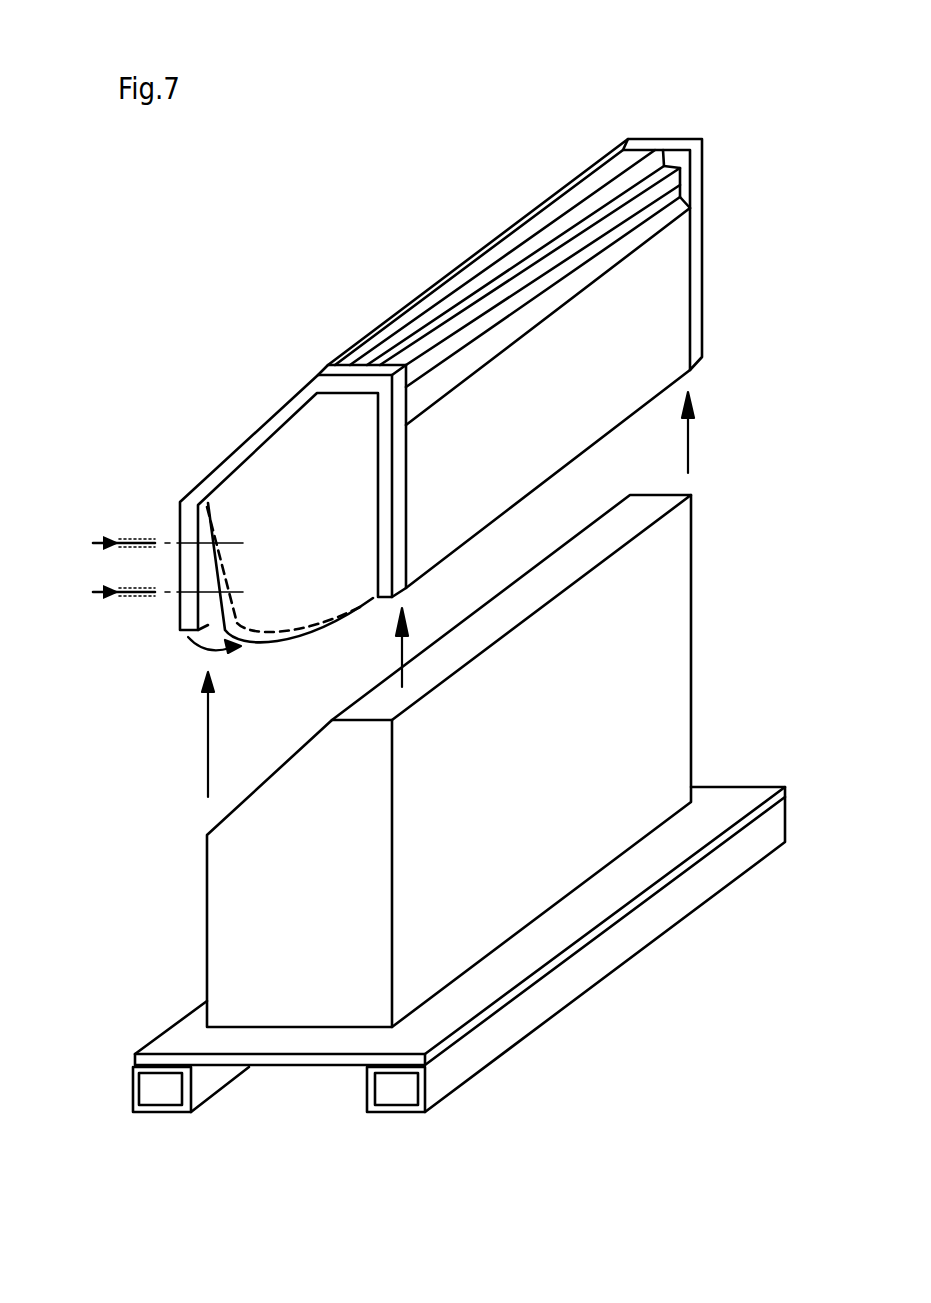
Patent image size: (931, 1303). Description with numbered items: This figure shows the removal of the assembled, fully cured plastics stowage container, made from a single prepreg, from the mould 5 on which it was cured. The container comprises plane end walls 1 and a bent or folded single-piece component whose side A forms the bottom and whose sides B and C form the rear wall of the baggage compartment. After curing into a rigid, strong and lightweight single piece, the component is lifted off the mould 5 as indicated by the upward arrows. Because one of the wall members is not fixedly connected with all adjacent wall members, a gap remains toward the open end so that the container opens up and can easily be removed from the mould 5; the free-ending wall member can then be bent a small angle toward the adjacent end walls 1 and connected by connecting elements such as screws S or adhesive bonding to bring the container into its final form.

The plane end wall 1 is at (285, 458).
The side A of component A is at (663, 308).
The side B of component B is at (610, 185).
The side C of component C is at (515, 224).
The screws S is at (103, 591).
The mould 5 is at (560, 934).